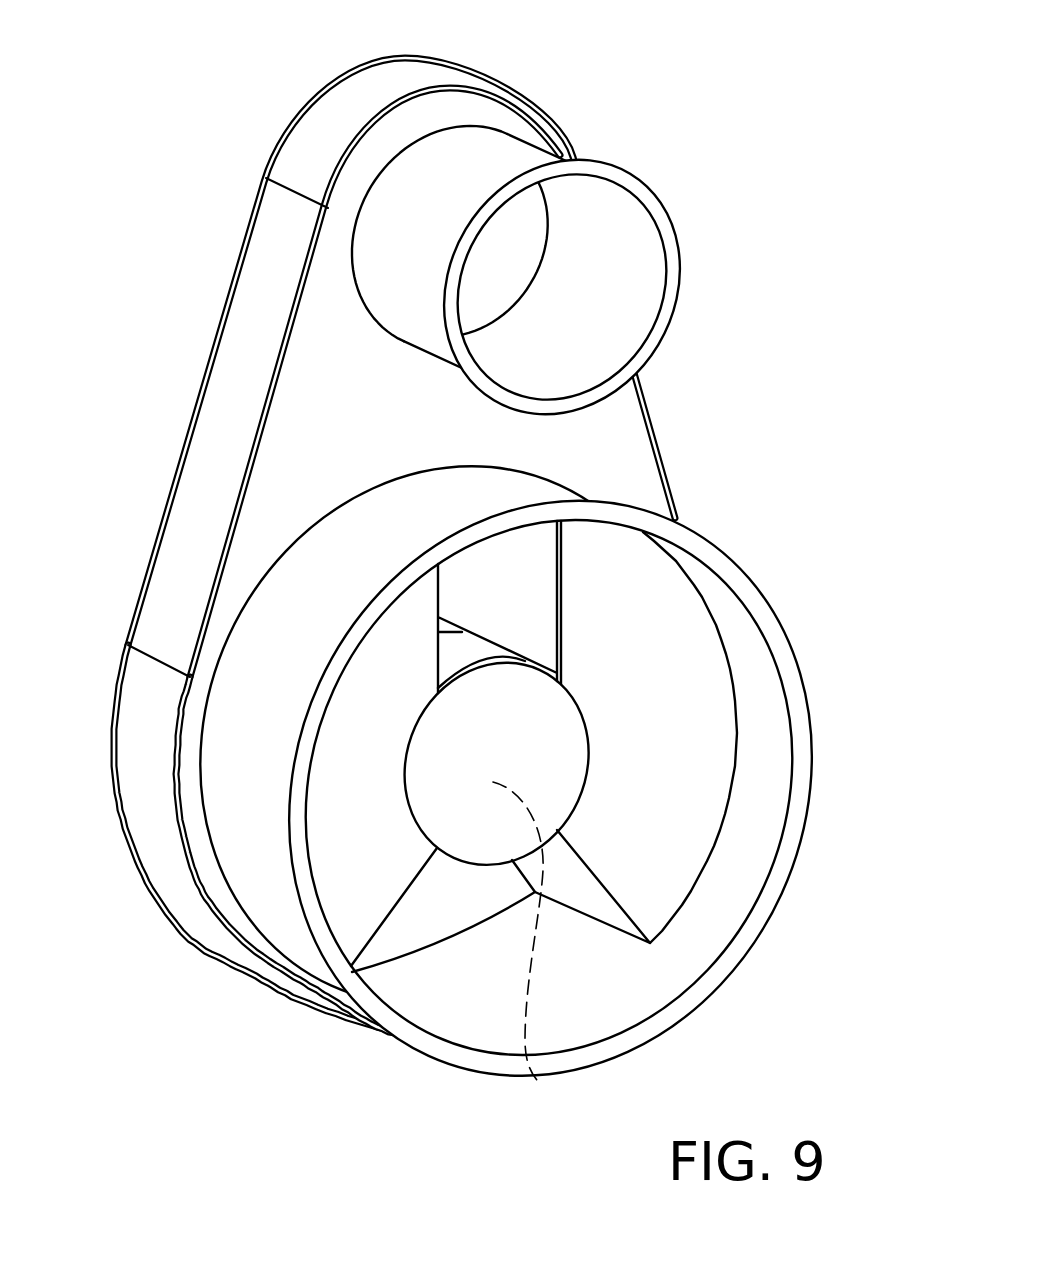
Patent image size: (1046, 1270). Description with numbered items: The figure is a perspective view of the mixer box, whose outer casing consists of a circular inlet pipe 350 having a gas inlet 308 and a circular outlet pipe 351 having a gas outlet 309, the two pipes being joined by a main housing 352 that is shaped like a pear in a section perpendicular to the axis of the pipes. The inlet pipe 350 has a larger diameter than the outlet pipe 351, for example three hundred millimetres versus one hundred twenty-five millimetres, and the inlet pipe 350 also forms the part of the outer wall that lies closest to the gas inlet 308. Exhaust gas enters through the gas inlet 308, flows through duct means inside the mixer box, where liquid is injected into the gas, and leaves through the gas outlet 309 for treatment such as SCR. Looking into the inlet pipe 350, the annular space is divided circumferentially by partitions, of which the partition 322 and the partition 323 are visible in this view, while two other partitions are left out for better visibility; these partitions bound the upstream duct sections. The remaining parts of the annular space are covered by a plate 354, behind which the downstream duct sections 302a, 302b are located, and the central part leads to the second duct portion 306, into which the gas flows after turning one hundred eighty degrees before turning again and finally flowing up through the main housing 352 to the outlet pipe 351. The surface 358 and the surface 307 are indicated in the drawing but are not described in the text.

The main housing 352 is at (176, 242).
The mounting plate 358 is at (350, 395).
The circular inlet pipe 350 is at (247, 765).
The circular outlet pipe 351 is at (463, 173).
The gas outlet 309 is at (628, 187).
The gas inlet 308 is at (767, 890).
The plate 354 is at (680, 750).
The inner surface 307 is at (767, 738).
The partition 322 is at (520, 594).
The downstream duct section 302a is at (375, 846).
The downstream duct section 302b is at (672, 795).
The partition 323 is at (580, 888).
The second duct portion 306 is at (545, 1085).